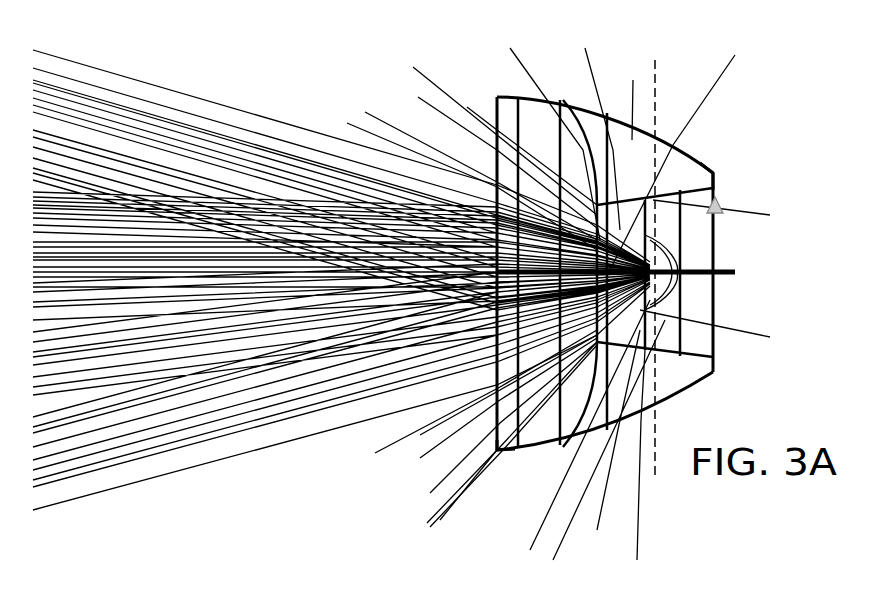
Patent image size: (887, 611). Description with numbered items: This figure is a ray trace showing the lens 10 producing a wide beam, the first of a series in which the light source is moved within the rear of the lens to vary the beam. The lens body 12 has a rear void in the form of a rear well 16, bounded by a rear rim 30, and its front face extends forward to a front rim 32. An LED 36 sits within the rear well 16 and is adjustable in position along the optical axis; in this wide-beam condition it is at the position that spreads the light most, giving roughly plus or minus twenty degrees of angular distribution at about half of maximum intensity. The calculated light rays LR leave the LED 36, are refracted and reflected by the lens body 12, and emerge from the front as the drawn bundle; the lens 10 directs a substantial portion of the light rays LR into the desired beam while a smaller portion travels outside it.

The lens 10 is at (505, 77).
The lens body 12 is at (630, 143).
The rear well 16 is at (697, 247).
The rear rim 30 is at (716, 173).
The front rim 32 is at (497, 452).
The LED 36 is at (652, 287).
The light rays LR is at (330, 443).